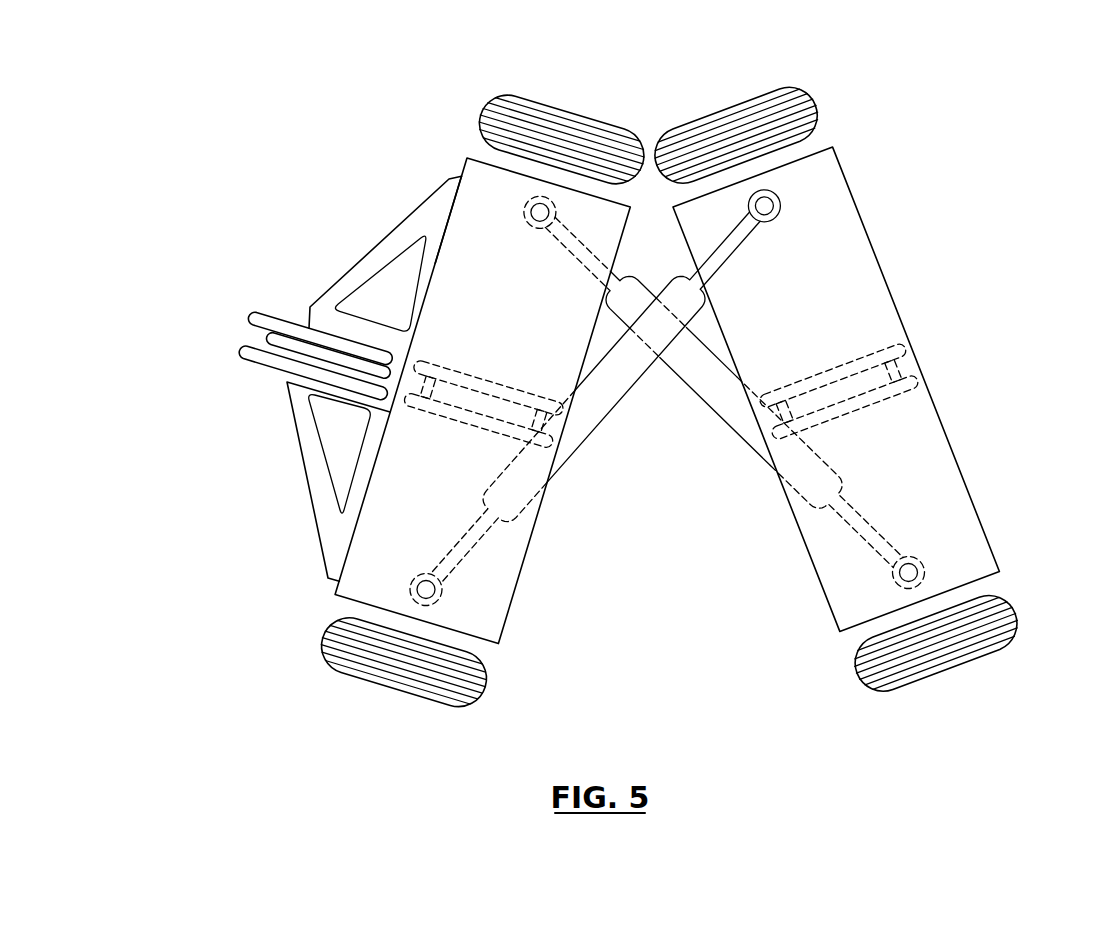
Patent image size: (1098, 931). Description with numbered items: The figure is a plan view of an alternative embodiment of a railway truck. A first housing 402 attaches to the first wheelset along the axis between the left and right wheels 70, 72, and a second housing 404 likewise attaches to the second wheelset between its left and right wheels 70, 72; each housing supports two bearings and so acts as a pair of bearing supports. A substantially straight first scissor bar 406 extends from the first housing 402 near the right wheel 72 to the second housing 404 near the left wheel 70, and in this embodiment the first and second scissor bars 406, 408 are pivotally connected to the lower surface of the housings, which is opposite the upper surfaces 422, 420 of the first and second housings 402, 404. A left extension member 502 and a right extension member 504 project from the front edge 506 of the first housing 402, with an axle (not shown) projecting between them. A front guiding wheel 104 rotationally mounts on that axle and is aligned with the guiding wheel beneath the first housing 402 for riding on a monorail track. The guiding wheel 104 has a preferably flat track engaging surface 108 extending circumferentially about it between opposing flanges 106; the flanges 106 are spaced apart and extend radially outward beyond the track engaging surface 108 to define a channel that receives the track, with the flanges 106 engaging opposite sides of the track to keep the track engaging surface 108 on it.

The left wheel 70 is at (432, 697).
The right wheel 72 is at (531, 104).
The guiding wheel 104 is at (250, 355).
The flange 106 is at (278, 319).
The track engaging surface 108 is at (268, 336).
The first housing 402 is at (352, 565).
The second housing 404 is at (937, 462).
The first scissor bar 406 is at (724, 438).
The second scissor bar 408 is at (606, 412).
The upper surface of the second housing 420 is at (833, 315).
The upper surface of the first housing 422 is at (519, 338).
The left extension member 502 is at (298, 440).
The right extension member 504 is at (342, 278).
The front edge 506 is at (427, 273).